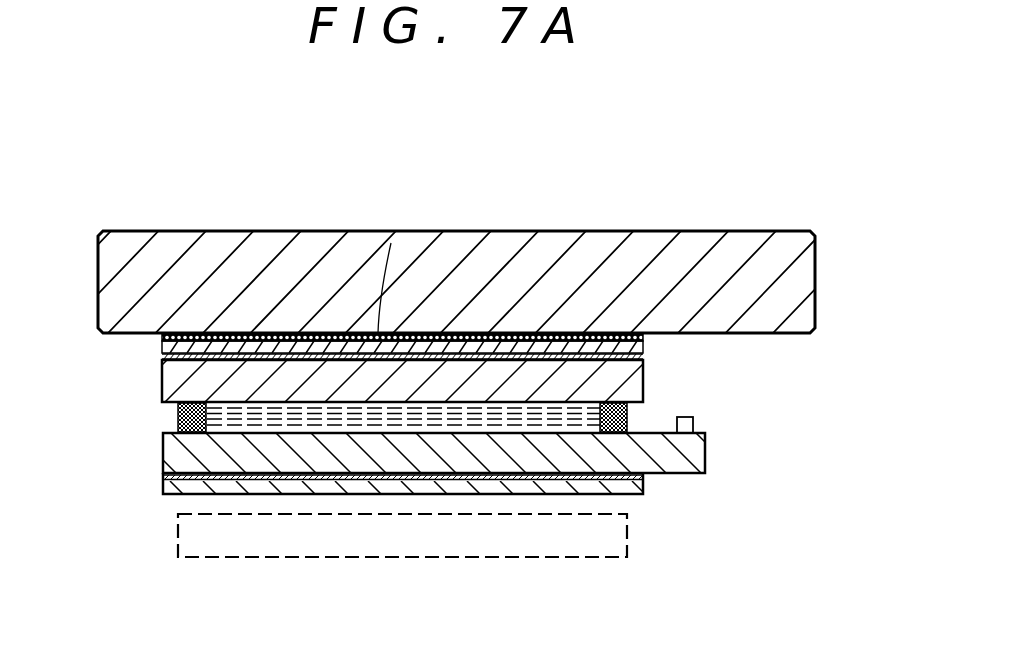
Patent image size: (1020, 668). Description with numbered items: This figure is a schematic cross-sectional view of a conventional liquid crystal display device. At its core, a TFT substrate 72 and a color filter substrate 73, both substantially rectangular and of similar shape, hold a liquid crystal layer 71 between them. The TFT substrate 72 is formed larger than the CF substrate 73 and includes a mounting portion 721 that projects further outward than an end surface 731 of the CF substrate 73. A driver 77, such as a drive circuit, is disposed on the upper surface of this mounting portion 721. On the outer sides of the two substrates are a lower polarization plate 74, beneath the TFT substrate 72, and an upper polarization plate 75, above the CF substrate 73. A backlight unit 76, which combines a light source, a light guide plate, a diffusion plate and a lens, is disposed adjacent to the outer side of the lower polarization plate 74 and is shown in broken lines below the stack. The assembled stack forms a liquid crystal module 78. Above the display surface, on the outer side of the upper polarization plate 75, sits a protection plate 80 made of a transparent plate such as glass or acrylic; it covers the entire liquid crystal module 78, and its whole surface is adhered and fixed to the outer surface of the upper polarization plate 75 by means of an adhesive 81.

The protection plate 80 is at (785, 242).
The adhesive 81 is at (412, 262).
The upper polarization plate 75 is at (643, 343).
The color filter (CF) substrate 73 is at (434, 381).
The end surface of the CF substrate 731 is at (643, 372).
The liquid crystal module 78 is at (131, 430).
The liquid crystal layer 71 is at (513, 422).
The TFT substrate 72 is at (420, 507).
The mounting portion 721 is at (690, 474).
The driver 77 is at (693, 419).
The lower polarization plate 74 is at (163, 488).
The backlight unit 76 is at (267, 558).